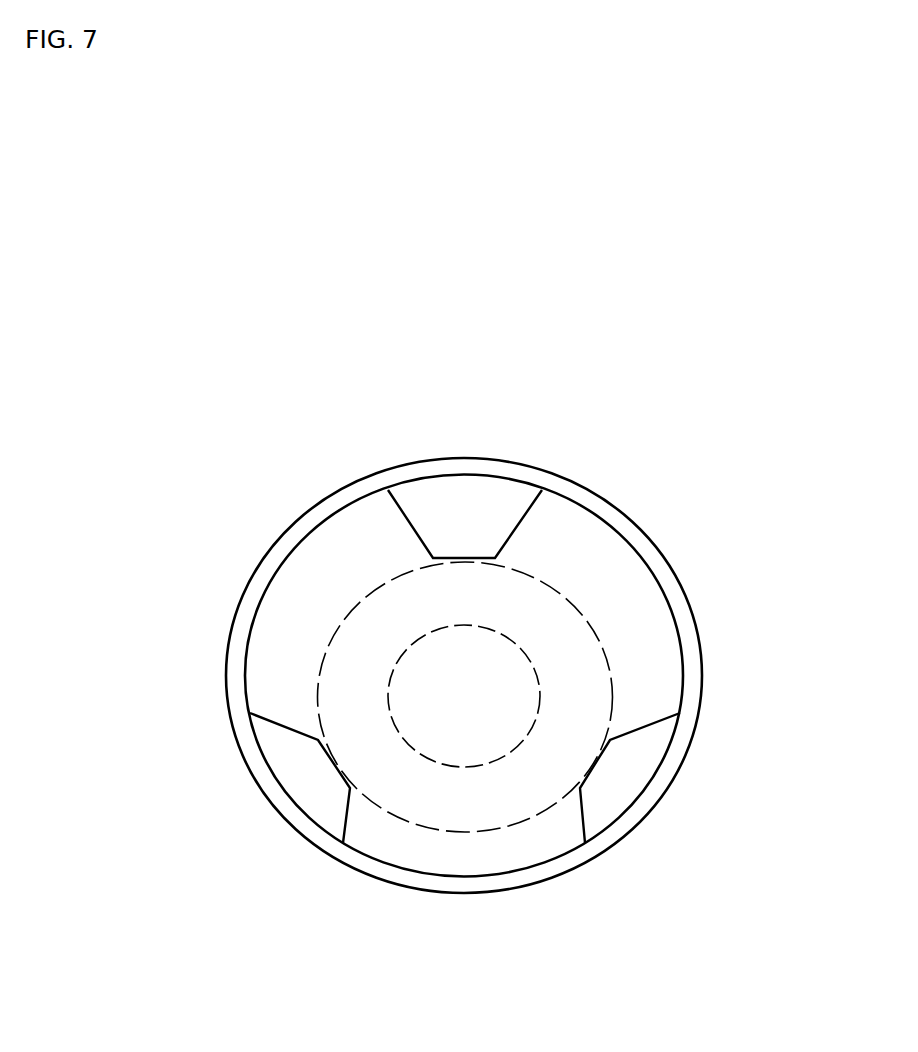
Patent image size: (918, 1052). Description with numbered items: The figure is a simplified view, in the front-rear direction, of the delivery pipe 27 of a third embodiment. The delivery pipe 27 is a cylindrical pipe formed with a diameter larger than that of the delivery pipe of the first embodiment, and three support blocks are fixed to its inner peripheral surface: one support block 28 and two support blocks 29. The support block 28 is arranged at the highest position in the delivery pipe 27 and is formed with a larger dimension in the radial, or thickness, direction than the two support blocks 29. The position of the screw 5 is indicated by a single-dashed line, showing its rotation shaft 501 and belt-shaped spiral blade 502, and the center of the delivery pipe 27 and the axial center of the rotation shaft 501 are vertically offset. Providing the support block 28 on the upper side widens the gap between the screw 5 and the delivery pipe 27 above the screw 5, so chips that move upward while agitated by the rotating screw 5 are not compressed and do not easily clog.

The delivery pipe 27 is at (303, 525).
The support block 28 is at (458, 498).
The support blocks 29 is at (298, 774).
The screw 5 is at (567, 676).
The rotation shaft 501 is at (495, 632).
The spiral blade 502 is at (595, 628).